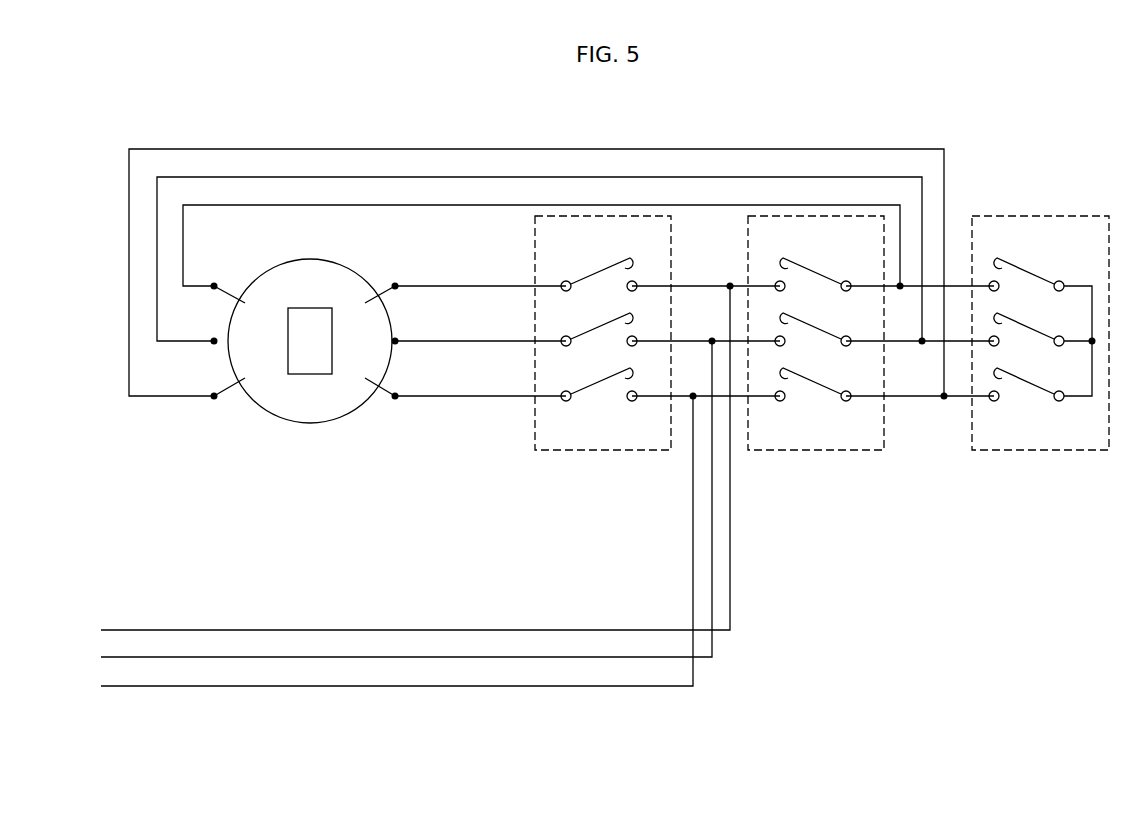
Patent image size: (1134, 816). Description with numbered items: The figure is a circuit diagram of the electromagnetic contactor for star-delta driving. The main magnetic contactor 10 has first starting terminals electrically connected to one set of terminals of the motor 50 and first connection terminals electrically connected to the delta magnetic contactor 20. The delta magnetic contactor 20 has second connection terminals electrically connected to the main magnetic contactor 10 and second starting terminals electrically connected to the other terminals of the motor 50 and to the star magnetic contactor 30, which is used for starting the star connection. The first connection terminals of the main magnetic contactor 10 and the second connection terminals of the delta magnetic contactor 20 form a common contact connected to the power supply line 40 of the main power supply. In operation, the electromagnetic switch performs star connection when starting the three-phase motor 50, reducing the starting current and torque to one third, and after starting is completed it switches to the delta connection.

The MCM 10 is at (627, 216).
The MCD 20 is at (833, 216).
The magnetic contactor Y (MCY) 30 is at (1062, 216).
The three-phase power supply lines R, S, T 40 is at (520, 712).
The motor 50 is at (342, 418).